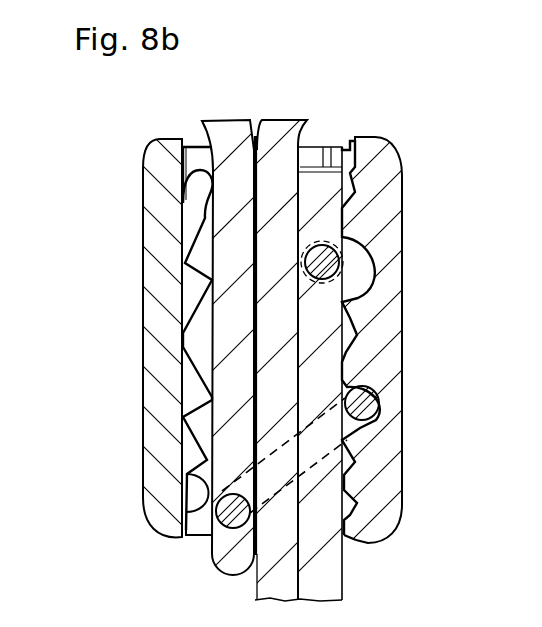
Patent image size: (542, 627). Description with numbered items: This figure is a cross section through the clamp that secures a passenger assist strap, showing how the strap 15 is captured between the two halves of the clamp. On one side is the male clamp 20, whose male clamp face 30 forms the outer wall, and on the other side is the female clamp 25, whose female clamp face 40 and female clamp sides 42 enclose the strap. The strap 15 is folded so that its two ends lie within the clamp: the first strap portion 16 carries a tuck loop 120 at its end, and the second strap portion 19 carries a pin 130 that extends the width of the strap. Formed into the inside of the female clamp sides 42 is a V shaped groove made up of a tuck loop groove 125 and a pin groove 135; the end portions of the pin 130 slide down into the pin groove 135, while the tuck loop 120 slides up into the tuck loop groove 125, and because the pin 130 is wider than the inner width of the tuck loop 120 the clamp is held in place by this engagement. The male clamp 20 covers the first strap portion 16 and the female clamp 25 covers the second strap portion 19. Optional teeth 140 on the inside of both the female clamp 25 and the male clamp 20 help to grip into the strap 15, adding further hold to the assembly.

The male clamp 20 is at (136, 151).
The strap 15 is at (272, 158).
The female clamp sides 42 is at (313, 193).
The teeth 140 is at (205, 222).
The female clamp 25 is at (407, 144).
The pin 130 is at (343, 242).
The pin groove 135 is at (358, 279).
The male clamp face 30 is at (143, 323).
The female clamp face 40 is at (387, 325).
The tuck loop 120 is at (372, 407).
The tuck loop groove 125 is at (348, 440).
The first strap portion 16 is at (203, 539).
The second strap portion 19 is at (349, 545).